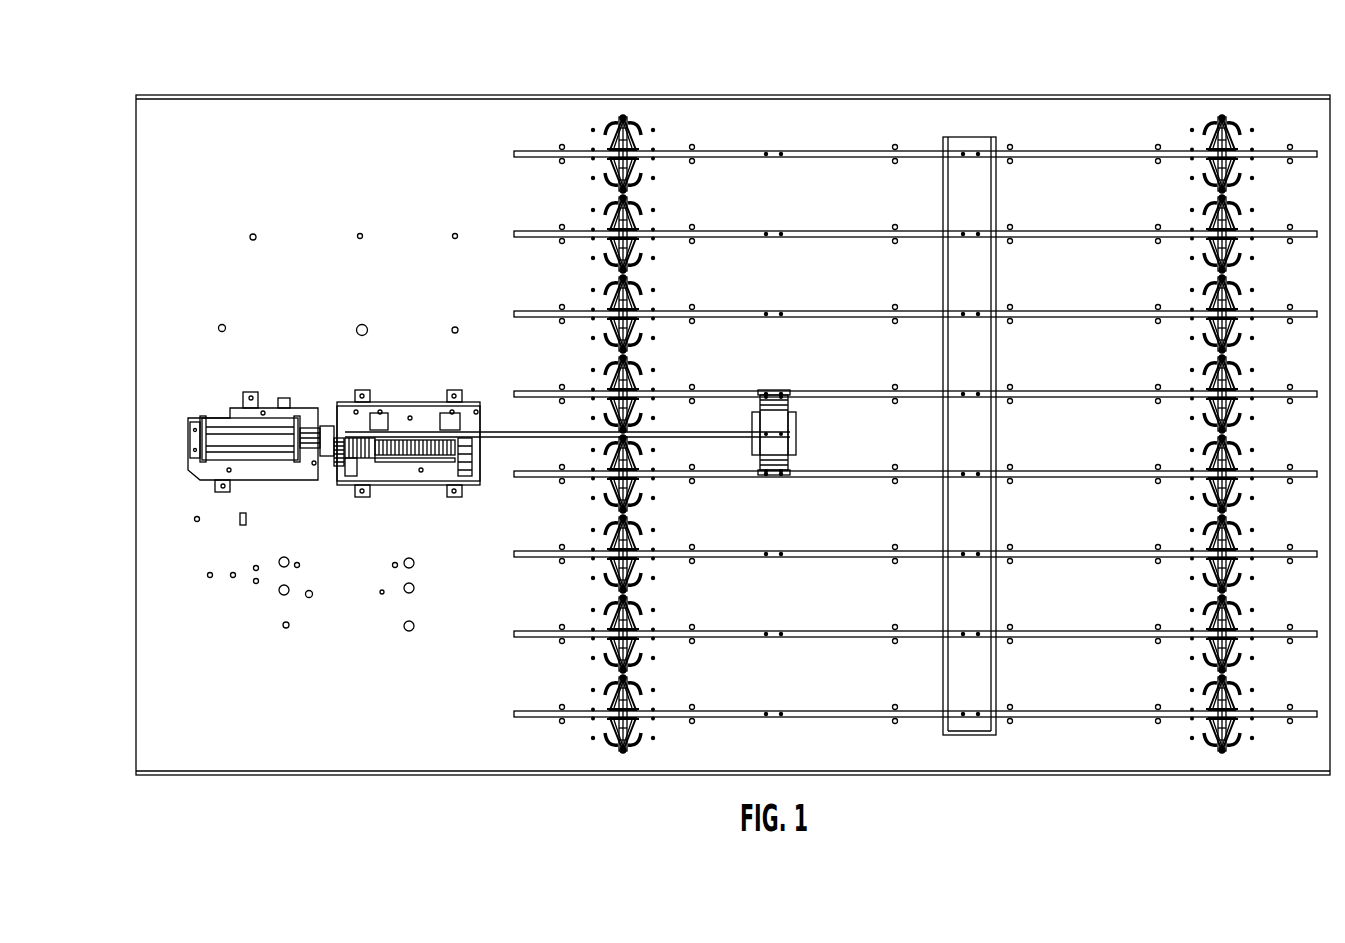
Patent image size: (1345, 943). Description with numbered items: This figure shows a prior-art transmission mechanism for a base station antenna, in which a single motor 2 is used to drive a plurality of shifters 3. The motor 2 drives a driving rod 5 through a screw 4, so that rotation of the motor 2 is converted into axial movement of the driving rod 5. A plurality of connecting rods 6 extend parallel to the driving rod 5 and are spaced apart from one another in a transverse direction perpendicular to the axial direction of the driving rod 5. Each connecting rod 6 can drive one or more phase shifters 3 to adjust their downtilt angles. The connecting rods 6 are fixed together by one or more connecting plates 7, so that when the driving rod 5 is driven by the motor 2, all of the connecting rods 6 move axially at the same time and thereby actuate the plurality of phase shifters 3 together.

The motor 2 is at (237, 453).
The shifter 3 is at (1222, 118).
The screw 4 is at (400, 448).
The driving rod 5 is at (520, 432).
The connecting rod 6 is at (803, 155).
The connecting plate 7 is at (975, 143).